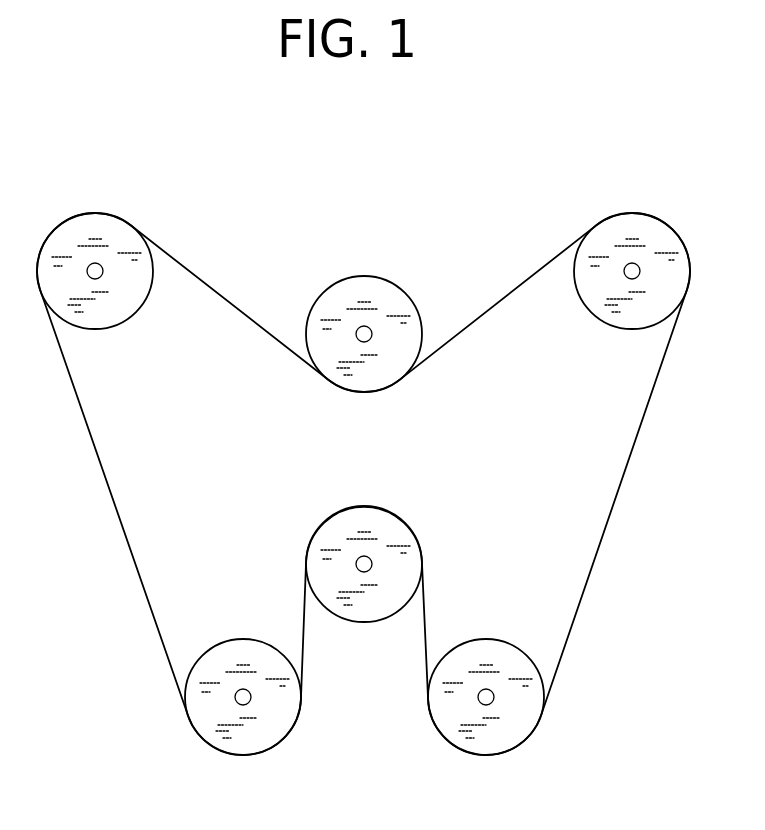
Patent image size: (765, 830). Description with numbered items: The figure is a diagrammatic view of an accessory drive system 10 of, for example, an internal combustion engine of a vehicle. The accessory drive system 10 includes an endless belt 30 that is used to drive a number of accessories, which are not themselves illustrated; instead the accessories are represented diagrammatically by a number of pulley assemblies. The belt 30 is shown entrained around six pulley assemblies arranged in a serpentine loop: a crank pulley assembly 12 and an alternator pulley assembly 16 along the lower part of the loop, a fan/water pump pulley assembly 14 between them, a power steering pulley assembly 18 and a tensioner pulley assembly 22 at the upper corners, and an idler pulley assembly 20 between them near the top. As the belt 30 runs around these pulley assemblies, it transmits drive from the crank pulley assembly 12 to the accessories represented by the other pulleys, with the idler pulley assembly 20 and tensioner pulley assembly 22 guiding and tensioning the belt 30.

The accessory drive system 10 is at (313, 217).
The crank pulley assembly 12 is at (257, 744).
The fan/water pump pulley assembly 14 is at (375, 522).
The alternator pulley assembly 16 is at (522, 720).
The power steering pulley assembly 18 is at (637, 232).
The idler pulley assembly 20 is at (365, 290).
The tensioner pulley assembly 22 is at (100, 228).
The endless belt 30 is at (587, 587).